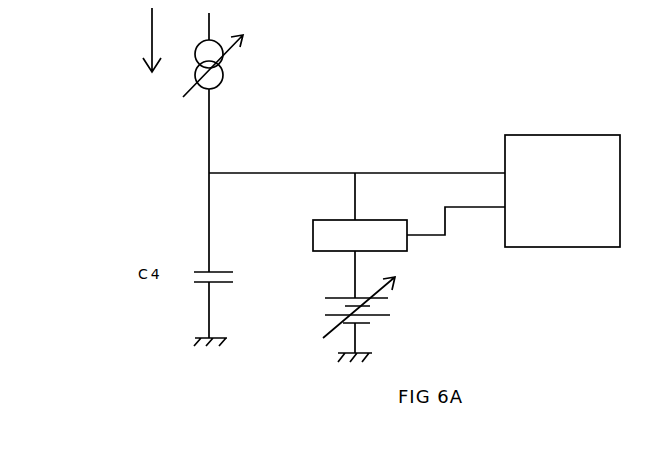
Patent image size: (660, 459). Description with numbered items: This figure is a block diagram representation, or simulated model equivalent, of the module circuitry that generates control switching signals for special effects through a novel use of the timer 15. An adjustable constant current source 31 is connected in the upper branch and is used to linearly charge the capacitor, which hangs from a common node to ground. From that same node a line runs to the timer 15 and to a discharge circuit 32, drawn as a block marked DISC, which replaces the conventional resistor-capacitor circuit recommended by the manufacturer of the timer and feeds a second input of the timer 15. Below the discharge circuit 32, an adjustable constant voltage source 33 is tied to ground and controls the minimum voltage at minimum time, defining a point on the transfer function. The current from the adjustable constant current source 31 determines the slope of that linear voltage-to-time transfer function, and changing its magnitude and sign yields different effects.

The adjustable constant current source 31 is at (225, 72).
The discharge circuit 32 is at (407, 248).
The adjustable constant voltage source 33 is at (390, 323).
The timer 555 15 is at (620, 227).